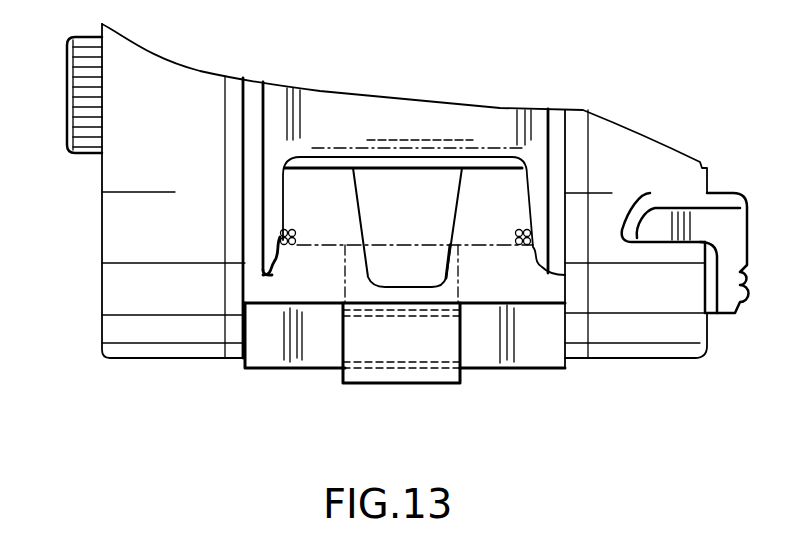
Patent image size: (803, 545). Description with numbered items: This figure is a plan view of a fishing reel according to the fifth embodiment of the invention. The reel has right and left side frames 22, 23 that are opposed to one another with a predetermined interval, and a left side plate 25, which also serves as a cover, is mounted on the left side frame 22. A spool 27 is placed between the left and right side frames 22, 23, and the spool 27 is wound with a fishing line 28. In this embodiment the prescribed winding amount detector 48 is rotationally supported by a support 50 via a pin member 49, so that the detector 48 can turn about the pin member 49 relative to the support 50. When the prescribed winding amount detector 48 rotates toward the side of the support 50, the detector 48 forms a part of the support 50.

The left side frame 22 is at (233, 332).
The right side frame 23 is at (575, 370).
The left side plate 25 is at (110, 288).
The spool 27 is at (460, 118).
The fishing line 28 is at (292, 231).
The prescribed winding amount detector 48 is at (383, 353).
The pin member 49 is at (433, 310).
The support 50 is at (315, 348).